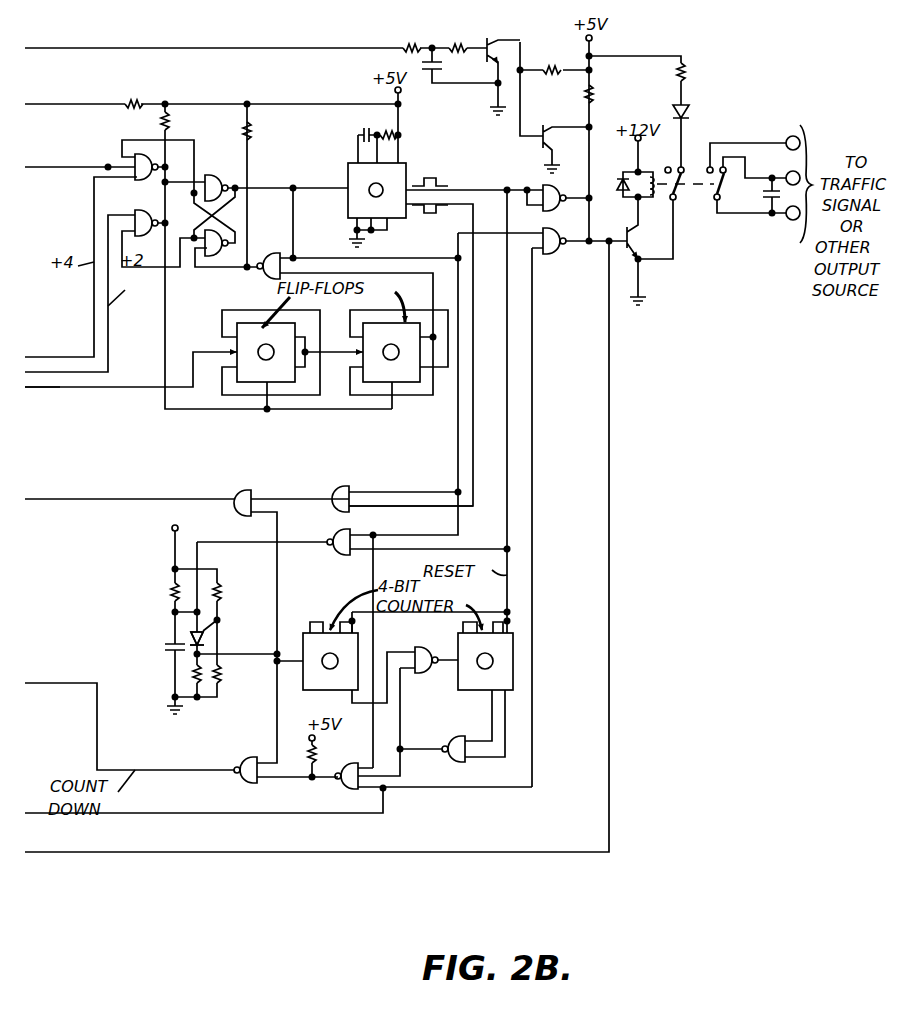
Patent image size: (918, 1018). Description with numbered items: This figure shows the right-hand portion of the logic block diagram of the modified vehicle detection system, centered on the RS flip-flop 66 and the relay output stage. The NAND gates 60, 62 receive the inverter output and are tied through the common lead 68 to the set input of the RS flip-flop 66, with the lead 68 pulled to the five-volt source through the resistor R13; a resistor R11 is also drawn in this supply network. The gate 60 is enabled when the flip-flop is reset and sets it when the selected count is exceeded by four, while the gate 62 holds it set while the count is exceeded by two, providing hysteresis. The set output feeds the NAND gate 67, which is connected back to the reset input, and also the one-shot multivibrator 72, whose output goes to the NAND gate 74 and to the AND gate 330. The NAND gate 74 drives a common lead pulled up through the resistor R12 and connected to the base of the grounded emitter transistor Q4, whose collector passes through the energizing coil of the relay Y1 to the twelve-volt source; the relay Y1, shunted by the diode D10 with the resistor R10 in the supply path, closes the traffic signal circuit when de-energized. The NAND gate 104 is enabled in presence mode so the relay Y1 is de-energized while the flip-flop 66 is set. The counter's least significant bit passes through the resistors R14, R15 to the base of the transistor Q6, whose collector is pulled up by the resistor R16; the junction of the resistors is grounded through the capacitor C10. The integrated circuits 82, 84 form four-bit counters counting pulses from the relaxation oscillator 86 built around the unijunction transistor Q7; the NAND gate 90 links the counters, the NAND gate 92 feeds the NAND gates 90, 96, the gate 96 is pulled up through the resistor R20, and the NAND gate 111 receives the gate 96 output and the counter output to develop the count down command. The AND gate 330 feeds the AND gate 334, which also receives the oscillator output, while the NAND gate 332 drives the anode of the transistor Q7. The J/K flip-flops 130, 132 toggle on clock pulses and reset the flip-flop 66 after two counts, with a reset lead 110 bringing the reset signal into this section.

The resistor R11 is at (135, 102).
The resistor R13 is at (162, 116).
The NAND gate 60 is at (148, 183).
The NAND gate 62 is at (153, 239).
The RS flip-flop 66 is at (222, 208).
The NAND gate 67 is at (262, 280).
The common lead 68 is at (163, 328).
The reset line 110 is at (135, 388).
The J/K flip-flop 130 is at (250, 382).
The J/K flip-flop 132 is at (405, 385).
The resistor R14 is at (405, 46).
The resistor R15 is at (455, 46).
The NPN transistor Q6 is at (487, 40).
The resistor R16 is at (553, 68).
The capacitor C10 is at (420, 75).
The one-shot multivibrator 72 is at (397, 163).
The resistor R12 is at (592, 94).
The resistor R10 is at (690, 80).
The diode D10 is at (690, 108).
The NPN transistor Q4 is at (638, 242).
The relay Y1 is at (697, 200).
The NAND gate 74 is at (556, 212).
The NAND gate 104 is at (551, 254).
The AND gate 334 is at (255, 479).
The AND gate 330 is at (342, 488).
The NAND gate 332 is at (347, 556).
The relaxation oscillator 86 is at (188, 594).
The unijunction transistor Q7 is at (190, 638).
The integrated circuit 82 is at (324, 692).
The integrated circuit 84 is at (456, 647).
The NAND gate 90 is at (420, 674).
The NAND gate 92 is at (450, 763).
The NAND gate 96 is at (344, 790).
The NAND gate 111 is at (240, 778).
The resistor R20 is at (320, 750).